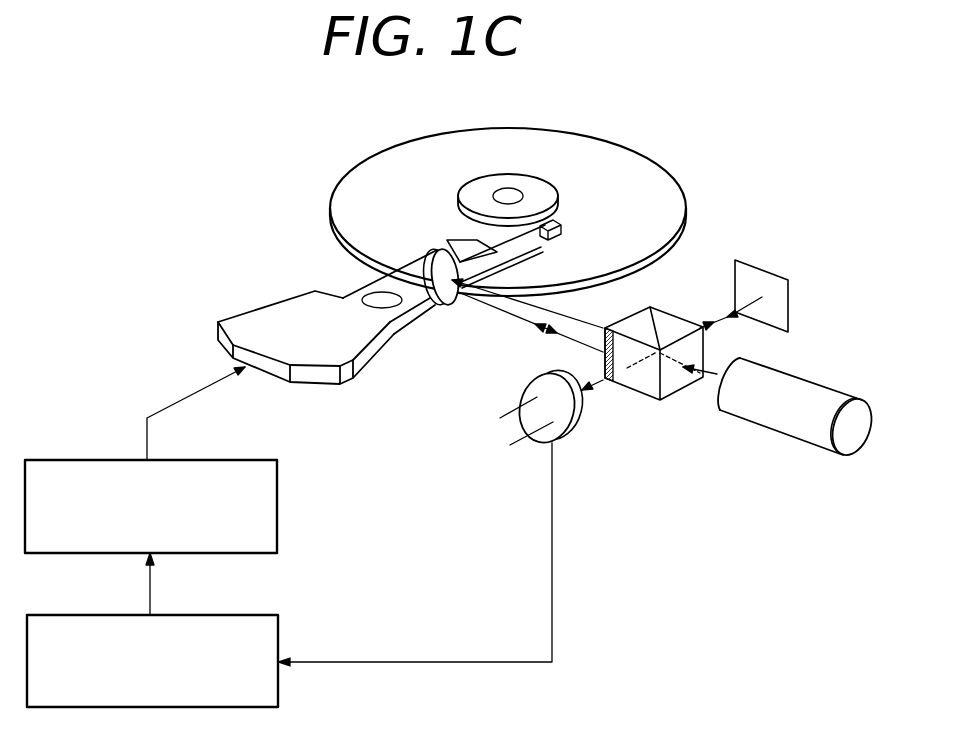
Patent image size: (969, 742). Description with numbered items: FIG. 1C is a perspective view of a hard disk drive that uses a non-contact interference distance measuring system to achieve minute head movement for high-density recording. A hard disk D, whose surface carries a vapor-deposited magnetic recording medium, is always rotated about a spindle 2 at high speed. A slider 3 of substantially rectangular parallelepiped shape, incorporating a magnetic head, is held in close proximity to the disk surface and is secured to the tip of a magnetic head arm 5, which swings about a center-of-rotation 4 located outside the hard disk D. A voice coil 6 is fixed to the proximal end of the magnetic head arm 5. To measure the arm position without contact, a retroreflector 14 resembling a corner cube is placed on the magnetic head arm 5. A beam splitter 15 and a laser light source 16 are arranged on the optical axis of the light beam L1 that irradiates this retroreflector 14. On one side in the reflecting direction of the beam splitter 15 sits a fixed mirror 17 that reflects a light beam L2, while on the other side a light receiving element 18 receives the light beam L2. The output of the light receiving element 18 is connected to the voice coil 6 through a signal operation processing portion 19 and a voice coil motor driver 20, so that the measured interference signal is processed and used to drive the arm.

The spindle 2 is at (510, 193).
The slider 3 is at (557, 234).
The center-of-rotation 4 is at (358, 297).
The magnetic head arm 5 is at (403, 324).
The voice coil 6 is at (240, 313).
The retroreflector 14 is at (417, 262).
The beam splitter 15 is at (635, 386).
The laser light source 16 is at (762, 420).
The fixed mirror 17 is at (757, 281).
The light receiving element 18 is at (560, 441).
The signal operation processing portion 19 is at (72, 616).
The voice coil motor driver 20 is at (63, 461).
The hard disk D is at (673, 197).
The light beam L1 is at (527, 315).
The light beam L2 is at (705, 383).